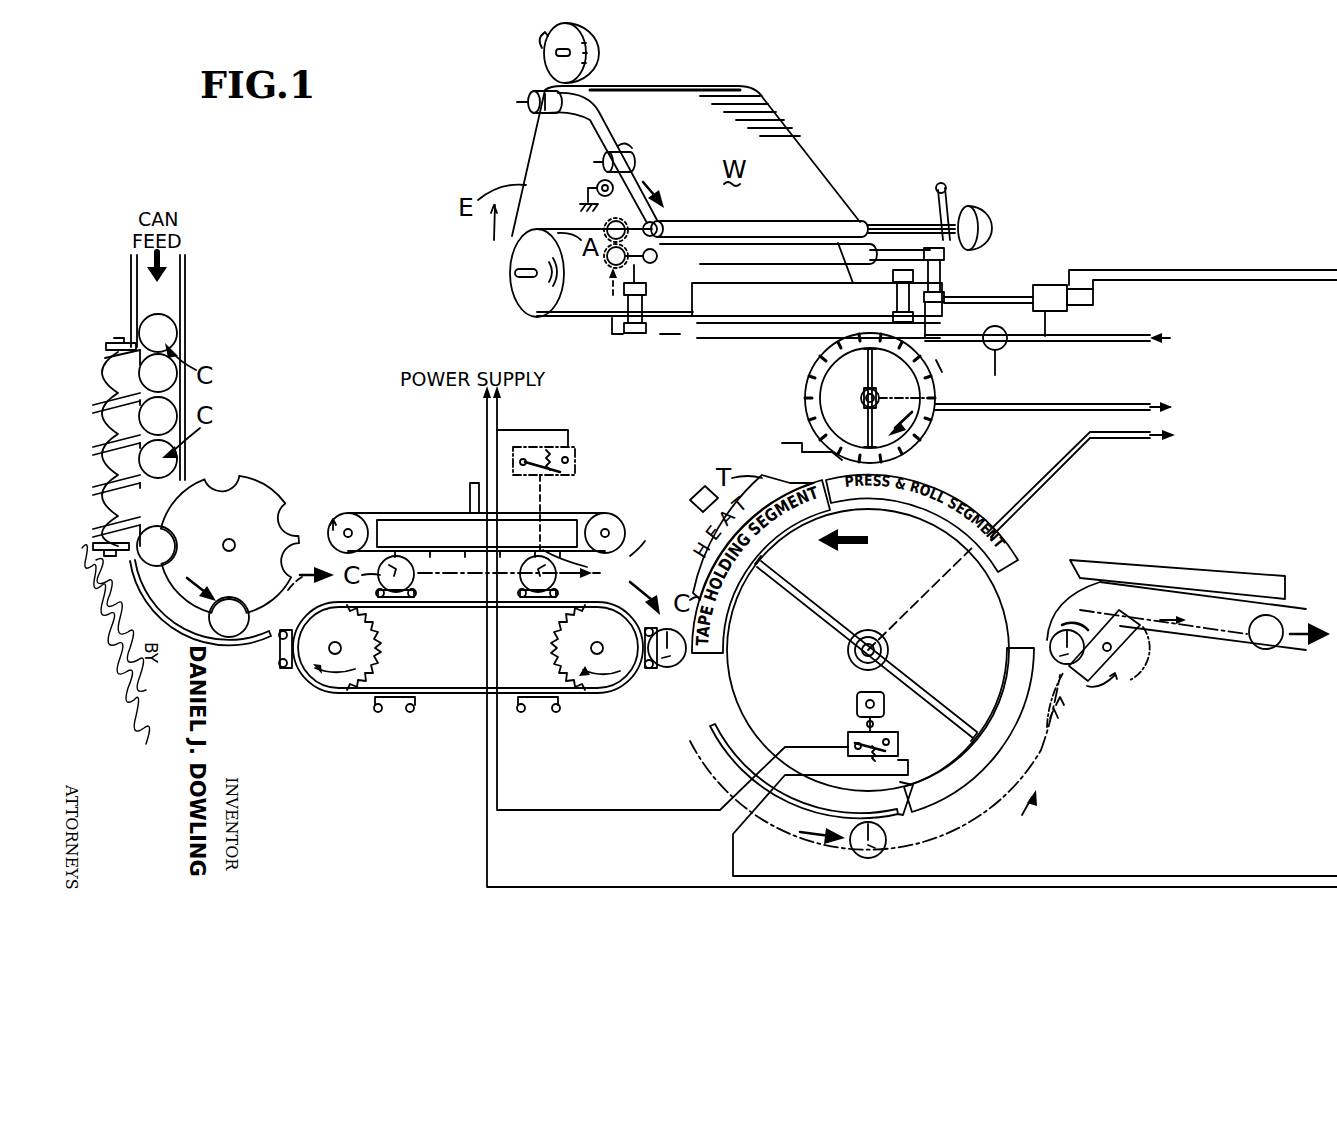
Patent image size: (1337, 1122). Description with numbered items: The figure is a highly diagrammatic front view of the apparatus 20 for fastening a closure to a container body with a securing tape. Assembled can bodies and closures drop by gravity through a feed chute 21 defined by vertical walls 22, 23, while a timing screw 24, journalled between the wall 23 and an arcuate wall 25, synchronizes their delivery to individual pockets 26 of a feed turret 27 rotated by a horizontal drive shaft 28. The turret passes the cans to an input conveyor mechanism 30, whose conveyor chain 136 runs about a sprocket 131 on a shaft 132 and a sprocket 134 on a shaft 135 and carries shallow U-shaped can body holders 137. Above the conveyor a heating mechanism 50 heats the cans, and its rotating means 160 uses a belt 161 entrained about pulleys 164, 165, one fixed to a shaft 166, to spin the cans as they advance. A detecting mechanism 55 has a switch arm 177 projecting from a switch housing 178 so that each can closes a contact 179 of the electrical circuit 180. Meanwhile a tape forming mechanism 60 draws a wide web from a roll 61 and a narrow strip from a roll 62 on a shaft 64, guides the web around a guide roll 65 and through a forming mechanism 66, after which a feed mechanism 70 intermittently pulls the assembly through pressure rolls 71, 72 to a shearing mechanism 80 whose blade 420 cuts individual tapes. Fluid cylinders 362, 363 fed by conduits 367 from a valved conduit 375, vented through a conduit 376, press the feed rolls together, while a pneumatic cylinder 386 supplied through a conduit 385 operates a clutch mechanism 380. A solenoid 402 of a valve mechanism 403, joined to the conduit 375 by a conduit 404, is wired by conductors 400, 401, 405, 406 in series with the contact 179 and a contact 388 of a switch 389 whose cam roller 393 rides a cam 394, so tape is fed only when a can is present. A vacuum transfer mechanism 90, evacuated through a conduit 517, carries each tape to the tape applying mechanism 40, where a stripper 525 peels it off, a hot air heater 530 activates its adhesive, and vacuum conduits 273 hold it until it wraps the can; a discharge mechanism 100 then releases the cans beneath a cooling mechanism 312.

The apparatus 20 is at (1110, 160).
The feed chute 21 is at (188, 298).
The vertical wall 22 is at (185, 338).
The vertical wall 23 is at (132, 296).
The timing screw 24 is at (100, 440).
The arcuate wall 25 is at (150, 614).
The pockets 26 is at (222, 486).
The feed turret 27 is at (274, 498).
The drive shaft 28 is at (236, 550).
The input conveyor mechanism 30 is at (482, 684).
The tape applying mechanism 40 is at (875, 683).
The heating mechanism 50 is at (452, 510).
The detecting mechanism 55 is at (605, 432).
The tape forming mechanism 60 is at (690, 146).
The roll 61 is at (578, 320).
The roll 62 is at (596, 50).
The shaft 64 is at (550, 50).
The guide roll 65 is at (528, 113).
The forming mechanism 66 is at (590, 114).
The feed mechanism 70 is at (870, 192).
The pressure roll 71 is at (640, 165).
The pressure roll 72 is at (596, 186).
The shearing mechanism 80 is at (836, 296).
The vacuum transfer mechanism 90 is at (800, 430).
The discharge mechanism 100 is at (1112, 690).
The sprocket 131 is at (606, 640).
The shaft 132 is at (590, 650).
The sprocket 134 is at (372, 646).
The shaft 135 is at (375, 655).
The conveyor chain 136 is at (332, 696).
The can body holders 137 is at (416, 598).
The rotating means 160 is at (624, 522).
The belt 161 is at (583, 520).
The pulley 164 is at (358, 518).
The pulley 165 is at (625, 542).
The shaft 166 is at (345, 530).
The switch arm 177 is at (576, 582).
The switch housing 178 is at (575, 456).
The contact 179 is at (560, 470).
The electrical circuit 180 is at (725, 852).
The conduit 273 is at (790, 588).
The cooling mechanism 312 is at (1238, 582).
The fluid cylinder 362 is at (920, 312).
The fluid cylinder 363 is at (648, 300).
The conduits 367 is at (940, 360).
The conduit 375 is at (1088, 344).
The conduit 376 is at (1000, 360).
The clutch mechanism 380 is at (982, 222).
The conduit 385 is at (1033, 290).
The pneumatic cylinder 386 is at (946, 290).
The contact 388 is at (890, 742).
The switch 389 is at (848, 740).
The cam roller 393 is at (910, 686).
The cam 394 is at (855, 692).
The conductor 400 is at (530, 435).
The conductor 401 is at (490, 855).
The solenoid 402 is at (1093, 296).
The solenoid operated valve mechanism 403 is at (1046, 284).
The conduit 404 is at (1060, 322).
The conductor 405 is at (1240, 282).
The conductor 406 is at (665, 808).
The blade 420 is at (776, 300).
The conduit 517 is at (1069, 391).
The stripper 525 is at (784, 453).
The hot air heater 530 is at (690, 496).